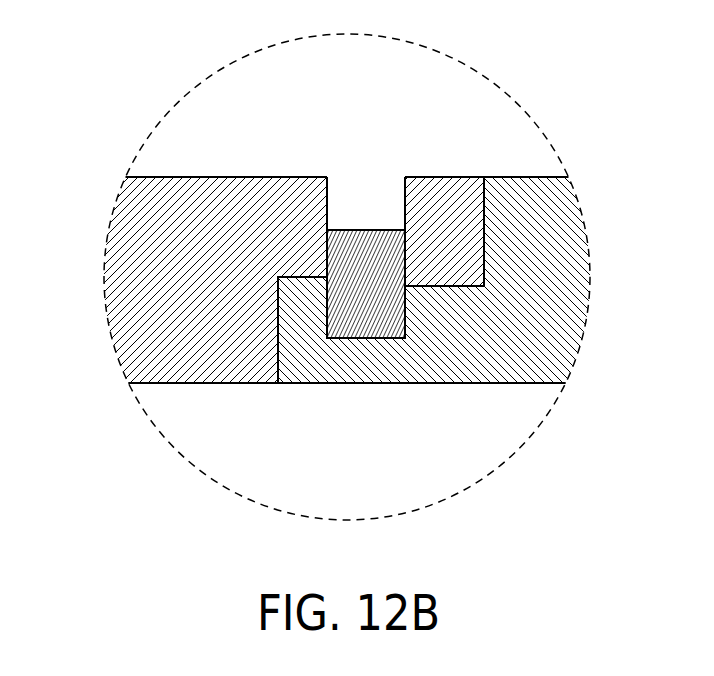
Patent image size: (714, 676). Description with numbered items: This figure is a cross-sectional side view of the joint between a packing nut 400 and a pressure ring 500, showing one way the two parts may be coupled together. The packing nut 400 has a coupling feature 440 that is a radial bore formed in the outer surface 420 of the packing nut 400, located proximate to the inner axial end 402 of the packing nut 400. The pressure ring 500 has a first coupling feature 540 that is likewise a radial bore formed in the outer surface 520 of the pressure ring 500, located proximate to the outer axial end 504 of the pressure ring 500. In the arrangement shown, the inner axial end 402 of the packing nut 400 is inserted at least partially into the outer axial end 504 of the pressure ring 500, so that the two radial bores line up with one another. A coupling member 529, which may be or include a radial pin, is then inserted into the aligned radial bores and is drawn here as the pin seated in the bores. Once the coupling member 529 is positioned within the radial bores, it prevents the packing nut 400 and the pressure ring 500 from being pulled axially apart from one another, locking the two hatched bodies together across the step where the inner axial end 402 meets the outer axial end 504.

The packing nut 400 is at (558, 312).
The inner axial end 402 is at (277, 363).
The outer surface 420 is at (518, 178).
The coupling feature 440 is at (357, 190).
The pressure ring 500 is at (152, 267).
The outer axial end 504 is at (277, 351).
The outer surface 520 is at (205, 177).
The coupling member 529 is at (375, 268).
The first coupling feature 540 is at (366, 148).